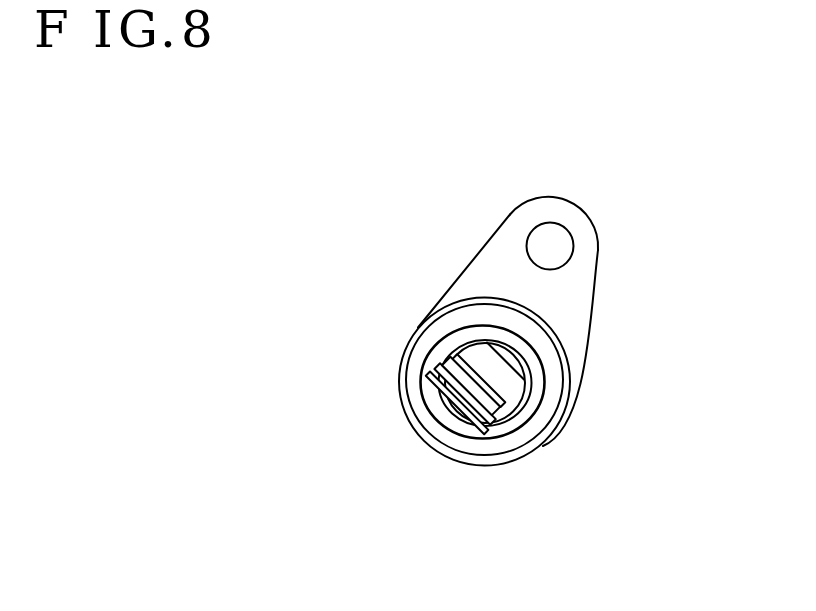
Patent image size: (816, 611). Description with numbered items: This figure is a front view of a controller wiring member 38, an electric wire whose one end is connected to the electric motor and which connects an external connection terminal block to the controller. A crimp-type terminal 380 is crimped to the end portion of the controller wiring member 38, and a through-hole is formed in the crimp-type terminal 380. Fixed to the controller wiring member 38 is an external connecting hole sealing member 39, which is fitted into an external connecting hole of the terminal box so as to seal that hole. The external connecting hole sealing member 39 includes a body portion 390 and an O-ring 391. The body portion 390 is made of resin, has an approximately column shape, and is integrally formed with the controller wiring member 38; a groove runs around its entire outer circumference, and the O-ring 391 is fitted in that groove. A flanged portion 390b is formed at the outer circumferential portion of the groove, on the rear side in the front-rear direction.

The controller wiring member 38 is at (497, 338).
The external connecting hole sealing member 39 is at (430, 310).
The crimp-type terminal 380 is at (467, 407).
The body portion 390 is at (438, 343).
The flanged portion 390b is at (503, 250).
The O-ring 391 is at (568, 352).